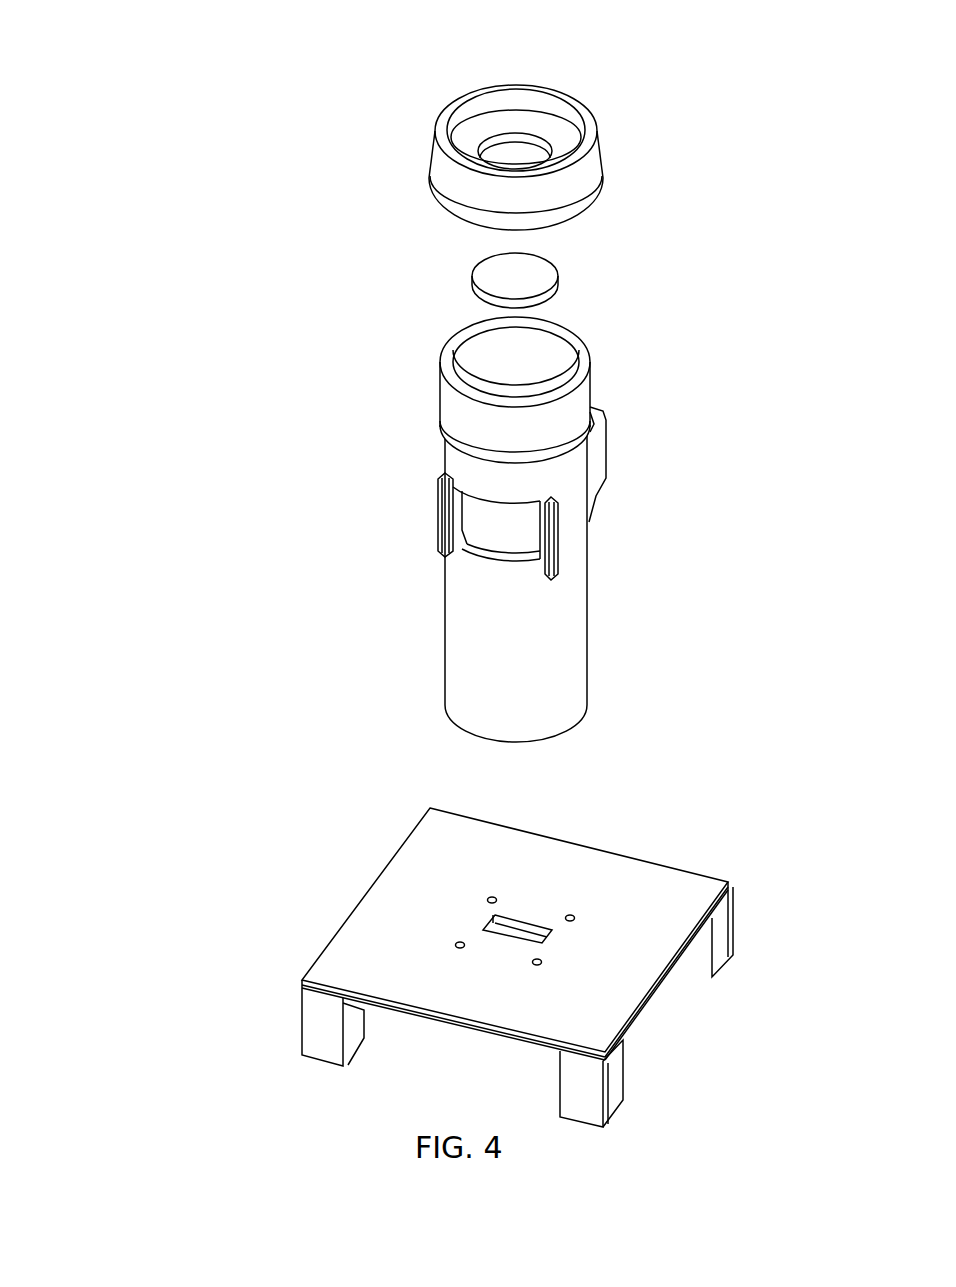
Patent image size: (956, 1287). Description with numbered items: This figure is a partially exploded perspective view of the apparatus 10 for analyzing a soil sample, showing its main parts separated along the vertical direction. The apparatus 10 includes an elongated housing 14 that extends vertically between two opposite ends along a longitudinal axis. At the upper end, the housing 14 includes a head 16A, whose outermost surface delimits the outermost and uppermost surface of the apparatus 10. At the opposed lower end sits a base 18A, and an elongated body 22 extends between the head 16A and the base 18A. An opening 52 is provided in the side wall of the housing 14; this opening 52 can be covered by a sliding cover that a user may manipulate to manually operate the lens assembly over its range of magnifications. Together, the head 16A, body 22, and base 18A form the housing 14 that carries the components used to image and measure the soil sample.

The apparatus 10 is at (224, 132).
The head 16A is at (418, 138).
The elongated body 22 is at (570, 282).
The elongated housing 14 is at (412, 400).
The opening 52 is at (410, 515).
The base 18A is at (380, 872).